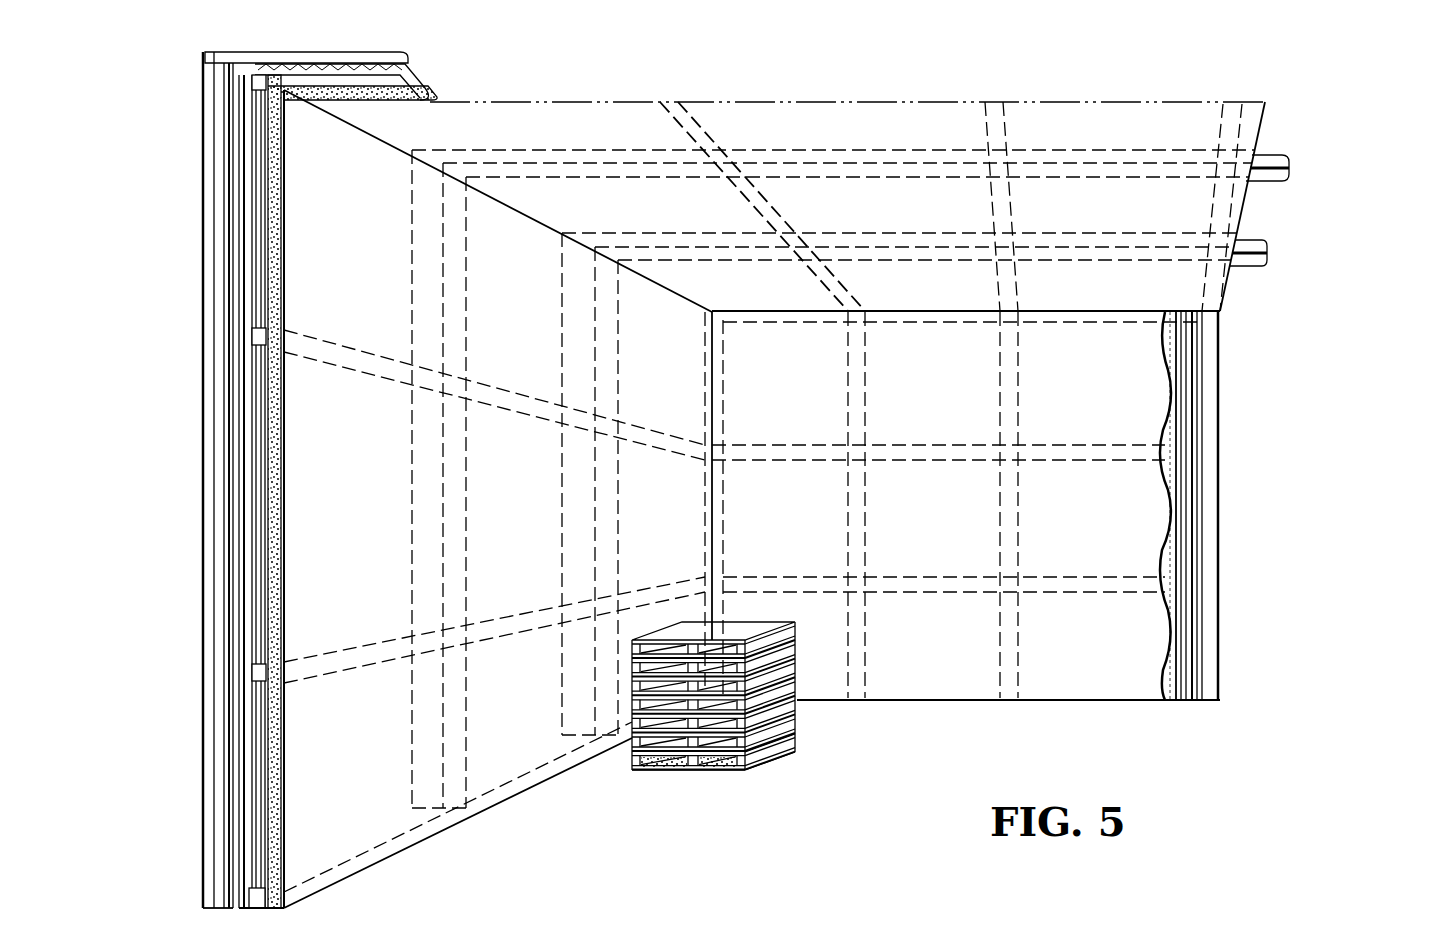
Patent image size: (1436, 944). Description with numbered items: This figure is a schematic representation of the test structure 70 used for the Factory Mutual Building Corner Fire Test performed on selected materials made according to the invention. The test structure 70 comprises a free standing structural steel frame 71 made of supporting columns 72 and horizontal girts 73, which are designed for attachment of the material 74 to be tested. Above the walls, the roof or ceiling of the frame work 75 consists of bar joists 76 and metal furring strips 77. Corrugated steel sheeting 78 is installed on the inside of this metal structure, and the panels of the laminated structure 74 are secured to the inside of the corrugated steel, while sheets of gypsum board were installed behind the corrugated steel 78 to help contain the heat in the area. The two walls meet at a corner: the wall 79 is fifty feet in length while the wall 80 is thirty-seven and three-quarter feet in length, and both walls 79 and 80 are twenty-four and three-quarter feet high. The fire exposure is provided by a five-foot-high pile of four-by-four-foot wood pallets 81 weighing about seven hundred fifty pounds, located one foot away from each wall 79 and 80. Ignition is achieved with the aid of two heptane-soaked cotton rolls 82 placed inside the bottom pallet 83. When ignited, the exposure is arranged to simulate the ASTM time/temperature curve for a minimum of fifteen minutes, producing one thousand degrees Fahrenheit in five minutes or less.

The test structure 70 is at (1327, 400).
The free standing structural steel frame 71 is at (1224, 382).
The supporting columns 72 is at (222, 450).
The horizontal girts 73 is at (555, 418).
The material to be tested 74 is at (384, 105).
The frame work roof or ceiling 75 is at (1280, 260).
The bar joists 76 is at (272, 62).
The metal furring strips 77 is at (662, 108).
The corrugated steel sheeting 78 is at (372, 100).
The wall 79 is at (512, 752).
The wall 80 is at (920, 675).
The wood pallets 81 is at (798, 637).
The heptane-soaked cotton rolls 82 is at (694, 765).
The bottom pallet 83 is at (766, 748).